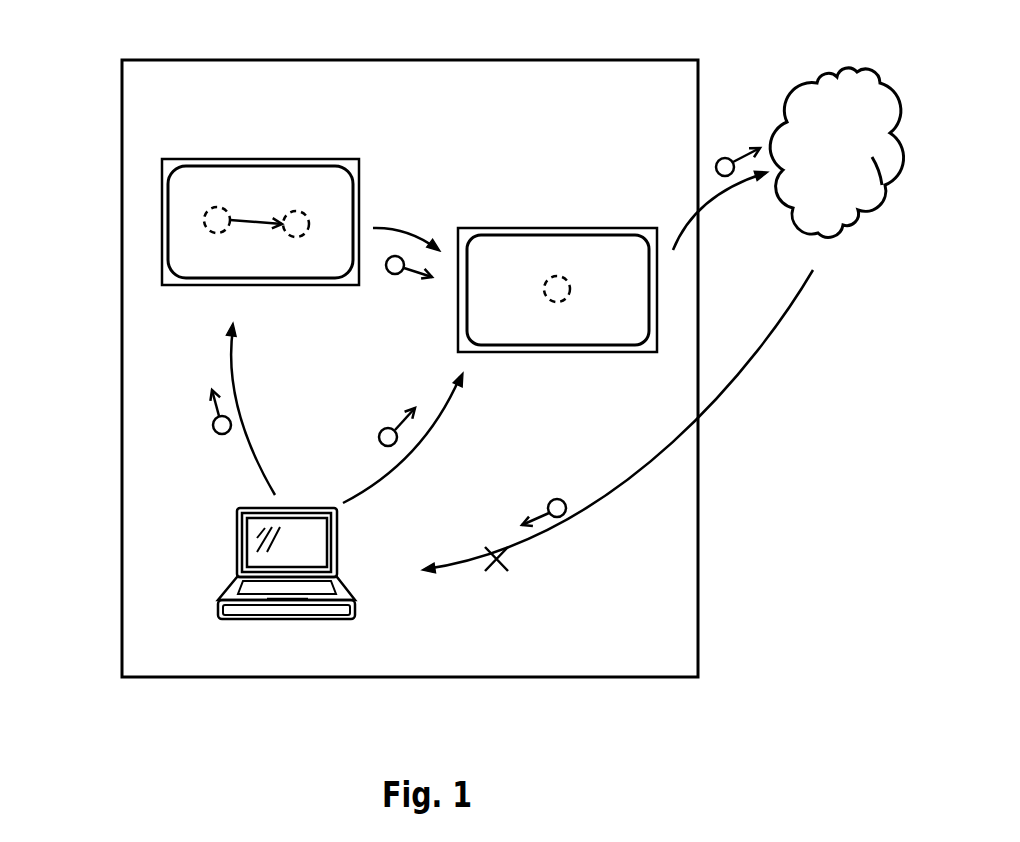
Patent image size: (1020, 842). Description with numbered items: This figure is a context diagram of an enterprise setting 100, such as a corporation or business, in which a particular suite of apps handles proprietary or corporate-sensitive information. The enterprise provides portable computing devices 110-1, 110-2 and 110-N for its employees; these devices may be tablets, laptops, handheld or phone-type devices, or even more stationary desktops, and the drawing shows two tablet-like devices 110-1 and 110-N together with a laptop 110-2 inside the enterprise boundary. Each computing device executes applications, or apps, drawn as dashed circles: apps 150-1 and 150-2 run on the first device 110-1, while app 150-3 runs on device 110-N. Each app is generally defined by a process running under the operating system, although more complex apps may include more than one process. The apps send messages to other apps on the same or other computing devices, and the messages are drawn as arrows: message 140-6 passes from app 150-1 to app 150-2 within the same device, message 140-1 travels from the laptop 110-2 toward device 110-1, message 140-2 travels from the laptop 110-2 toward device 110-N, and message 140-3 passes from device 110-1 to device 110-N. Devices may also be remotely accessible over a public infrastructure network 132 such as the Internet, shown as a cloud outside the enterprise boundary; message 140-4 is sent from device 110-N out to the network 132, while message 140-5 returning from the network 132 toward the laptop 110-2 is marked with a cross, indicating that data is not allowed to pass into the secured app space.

The enterprise setting 100 is at (135, 120).
The portable computing device 110-1 is at (360, 172).
The portable computing device 110-2 is at (335, 530).
The portable computing device 110-N is at (580, 227).
The public infrastructure network 132 is at (842, 227).
The message 140-1 is at (214, 432).
The message 140-2 is at (381, 443).
The message 140-3 is at (394, 275).
The message 140-4 is at (727, 158).
The message 140-5 is at (559, 500).
The message 140-6 is at (245, 218).
The application (app) 150-1 is at (217, 207).
The application (app) 150-2 is at (295, 238).
The application (app) 150-3 is at (559, 302).